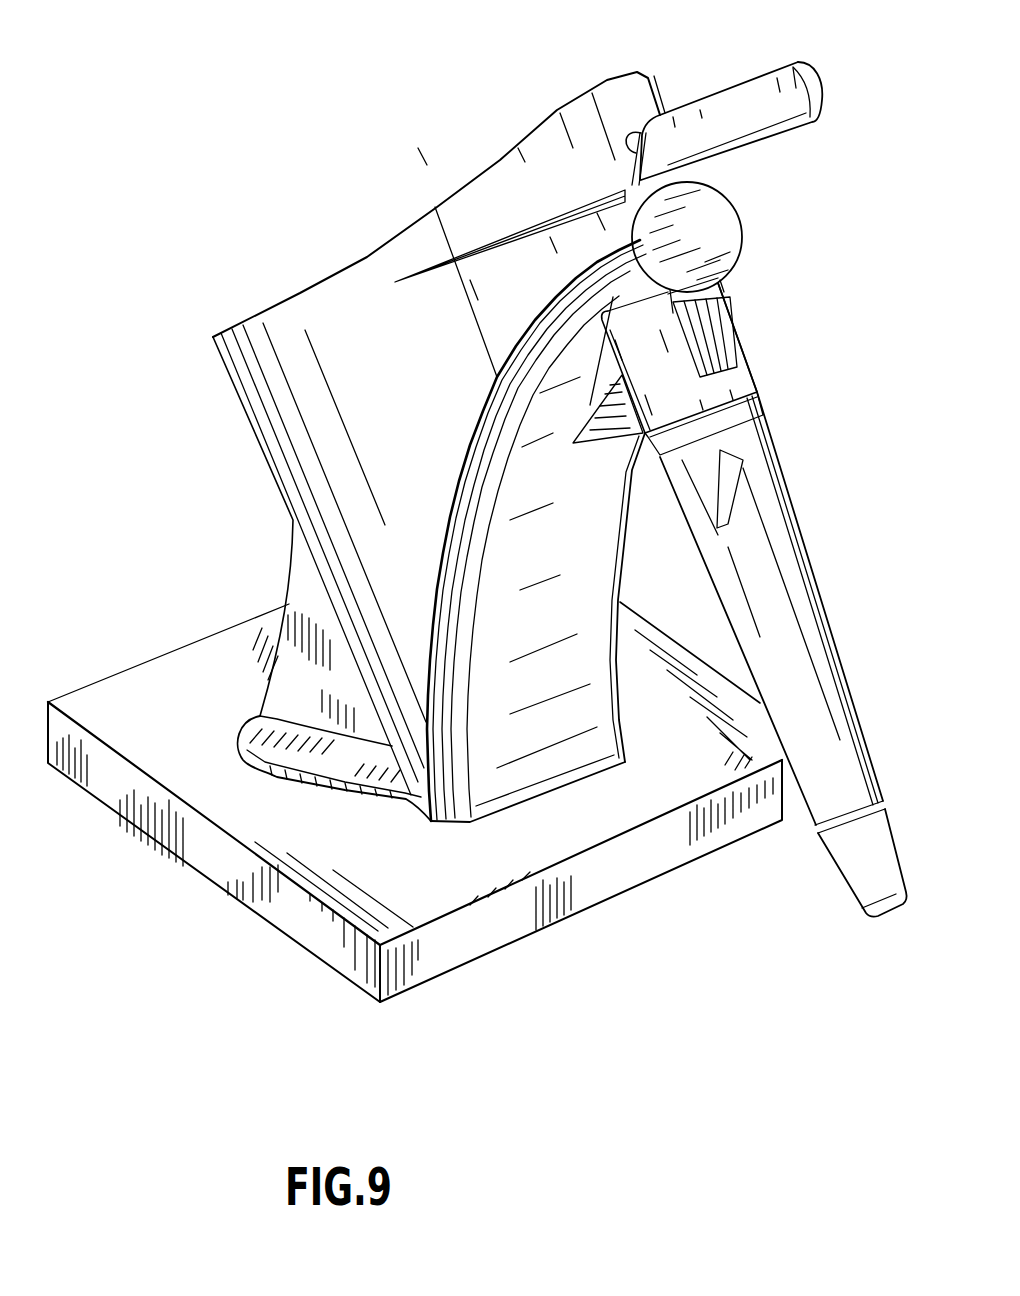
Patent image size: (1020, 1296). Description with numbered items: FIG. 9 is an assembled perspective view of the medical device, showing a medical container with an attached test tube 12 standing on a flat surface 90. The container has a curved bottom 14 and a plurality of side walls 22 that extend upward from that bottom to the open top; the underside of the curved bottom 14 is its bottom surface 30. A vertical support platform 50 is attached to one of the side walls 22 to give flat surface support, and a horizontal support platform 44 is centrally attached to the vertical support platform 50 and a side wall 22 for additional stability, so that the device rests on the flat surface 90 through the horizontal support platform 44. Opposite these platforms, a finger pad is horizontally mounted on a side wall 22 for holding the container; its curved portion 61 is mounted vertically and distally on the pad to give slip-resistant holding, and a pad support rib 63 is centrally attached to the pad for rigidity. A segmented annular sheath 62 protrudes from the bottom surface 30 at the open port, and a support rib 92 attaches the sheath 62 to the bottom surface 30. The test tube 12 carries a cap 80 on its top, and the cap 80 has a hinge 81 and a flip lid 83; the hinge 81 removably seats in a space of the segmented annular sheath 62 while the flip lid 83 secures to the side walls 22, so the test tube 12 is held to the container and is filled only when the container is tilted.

The test tube 12 is at (843, 653).
The curved bottom 14 is at (448, 520).
The side walls 22 is at (480, 200).
The bottom surface 30 is at (520, 611).
The horizontal support platform 44 is at (303, 760).
The vertical support platform 50 is at (293, 684).
The curved portion 61 is at (816, 100).
The segmented annular sheath 62 is at (632, 375).
The pad support rib 63 is at (630, 130).
The cap 80 is at (715, 353).
The hinge 81 is at (715, 288).
The flip lid 83 is at (698, 237).
The flat surface 90 is at (474, 867).
The support rib 92 is at (613, 428).